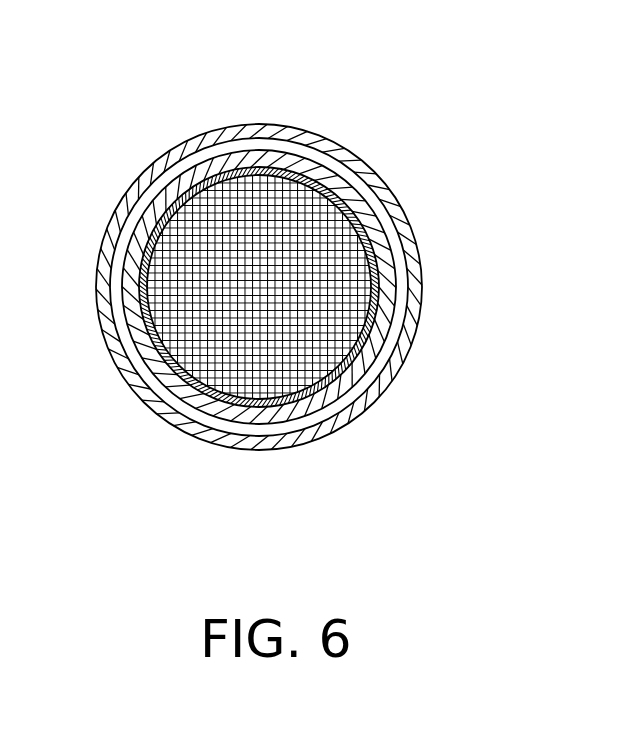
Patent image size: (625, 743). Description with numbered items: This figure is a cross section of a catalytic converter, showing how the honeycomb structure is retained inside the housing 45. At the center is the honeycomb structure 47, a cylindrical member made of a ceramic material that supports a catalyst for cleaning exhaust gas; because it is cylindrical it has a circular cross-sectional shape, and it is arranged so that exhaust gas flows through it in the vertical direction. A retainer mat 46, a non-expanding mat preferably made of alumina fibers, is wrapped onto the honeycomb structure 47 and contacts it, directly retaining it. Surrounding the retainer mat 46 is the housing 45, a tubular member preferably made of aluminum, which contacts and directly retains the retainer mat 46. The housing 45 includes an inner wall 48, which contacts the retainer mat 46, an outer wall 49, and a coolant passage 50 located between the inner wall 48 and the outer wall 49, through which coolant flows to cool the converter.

The housing 45 is at (201, 112).
The retainer mat 46 is at (182, 193).
The honeycomb structure 47 is at (193, 283).
The inner wall 48 is at (396, 205).
The outer wall 49 is at (420, 275).
The coolant passage 50 is at (368, 163).